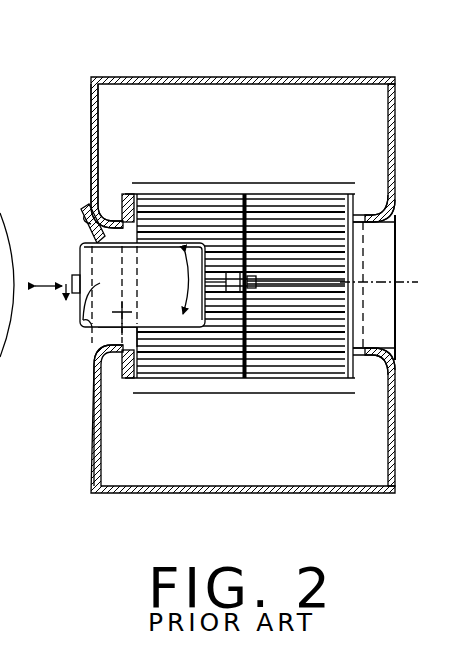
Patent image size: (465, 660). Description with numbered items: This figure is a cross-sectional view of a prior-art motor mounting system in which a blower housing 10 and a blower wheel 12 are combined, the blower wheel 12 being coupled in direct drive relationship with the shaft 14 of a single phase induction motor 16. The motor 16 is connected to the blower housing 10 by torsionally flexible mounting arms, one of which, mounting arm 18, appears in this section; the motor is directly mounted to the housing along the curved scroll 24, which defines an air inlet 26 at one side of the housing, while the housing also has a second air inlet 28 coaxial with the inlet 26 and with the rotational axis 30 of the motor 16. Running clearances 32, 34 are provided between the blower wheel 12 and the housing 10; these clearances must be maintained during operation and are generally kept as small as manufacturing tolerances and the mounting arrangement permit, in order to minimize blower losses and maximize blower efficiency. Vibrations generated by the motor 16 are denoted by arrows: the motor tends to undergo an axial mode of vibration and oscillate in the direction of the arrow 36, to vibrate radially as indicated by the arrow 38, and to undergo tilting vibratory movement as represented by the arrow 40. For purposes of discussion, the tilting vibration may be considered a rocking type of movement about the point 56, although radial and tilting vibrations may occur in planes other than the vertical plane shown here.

The blower housing 10 is at (324, 78).
The blower wheel 12 is at (340, 250).
The shaft 14 is at (228, 282).
The single phase induction motor 16 is at (168, 277).
The torsionally flexible mounting arm 18 is at (88, 218).
The curved scroll 24 is at (106, 215).
The air inlet 26 is at (98, 345).
The second air inlet 28 is at (385, 325).
The rotational axis 30 is at (412, 285).
The running clearance 32 is at (370, 215).
The running clearance 34 is at (115, 216).
The arrow 36 is at (46, 280).
The arrow 38 is at (65, 280).
The arrow 40 is at (185, 300).
The point 56 is at (83, 320).